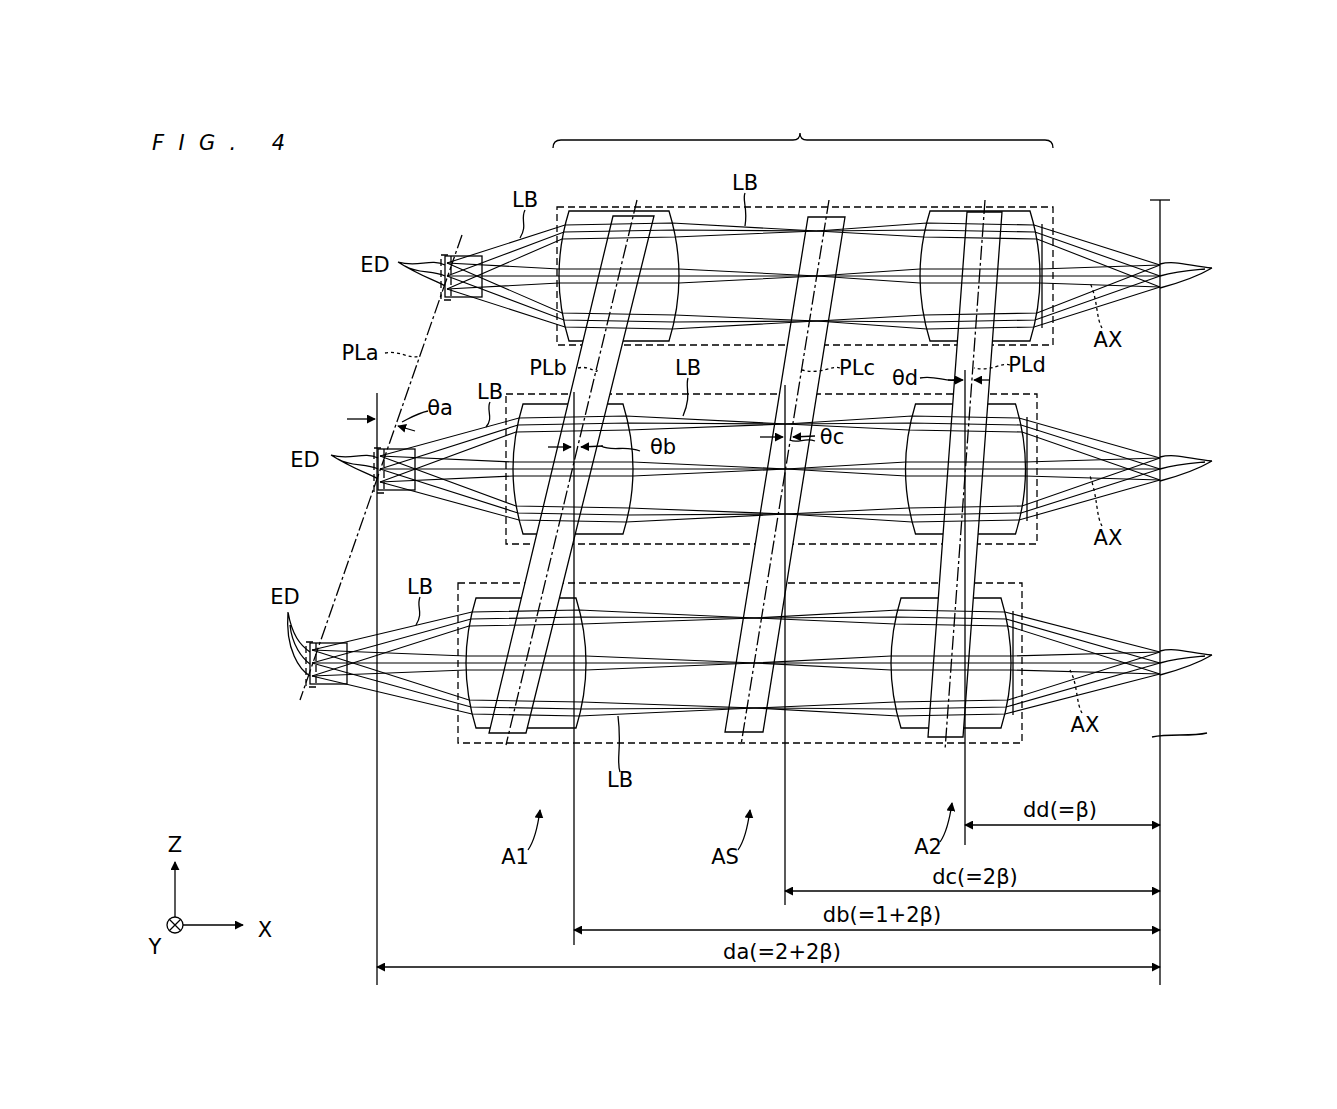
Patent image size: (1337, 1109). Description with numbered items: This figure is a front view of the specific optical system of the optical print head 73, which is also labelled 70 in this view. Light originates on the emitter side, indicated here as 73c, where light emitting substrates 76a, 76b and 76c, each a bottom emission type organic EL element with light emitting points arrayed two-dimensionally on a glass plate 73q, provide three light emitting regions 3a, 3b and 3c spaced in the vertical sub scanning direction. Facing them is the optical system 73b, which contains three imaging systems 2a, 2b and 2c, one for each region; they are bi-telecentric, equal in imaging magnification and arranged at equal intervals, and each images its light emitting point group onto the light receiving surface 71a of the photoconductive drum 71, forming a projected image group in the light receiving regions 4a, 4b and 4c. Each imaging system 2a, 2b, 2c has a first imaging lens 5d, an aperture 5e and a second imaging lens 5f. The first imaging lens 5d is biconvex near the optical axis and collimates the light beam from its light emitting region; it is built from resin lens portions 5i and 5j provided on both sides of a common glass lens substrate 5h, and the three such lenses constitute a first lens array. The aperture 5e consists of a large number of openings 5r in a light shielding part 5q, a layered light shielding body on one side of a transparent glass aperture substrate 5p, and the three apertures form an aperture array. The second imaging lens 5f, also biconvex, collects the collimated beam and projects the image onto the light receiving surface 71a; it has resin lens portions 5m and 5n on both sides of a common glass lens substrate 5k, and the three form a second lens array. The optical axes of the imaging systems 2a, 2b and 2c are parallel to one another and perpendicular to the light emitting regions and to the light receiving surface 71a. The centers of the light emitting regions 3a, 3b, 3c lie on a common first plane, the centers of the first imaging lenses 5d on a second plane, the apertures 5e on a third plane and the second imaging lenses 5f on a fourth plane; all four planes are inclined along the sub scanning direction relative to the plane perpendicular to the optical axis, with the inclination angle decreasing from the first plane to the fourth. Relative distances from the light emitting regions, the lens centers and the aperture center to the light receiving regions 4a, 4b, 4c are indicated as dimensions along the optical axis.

The optical print head 73 is at (1118, 99).
The optical module 70 is at (1068, 130).
The photoconductive drum 71 is at (1180, 198).
The light receiving surface 71a is at (1160, 712).
The optical system 73b is at (803, 128).
The light emitting section 73c is at (457, 203).
The glass plate 73q is at (406, 504).
The light emitting substrate 76a is at (405, 492).
The light emitting substrate 76b is at (322, 690).
The light emitting substrate 76c is at (468, 298).
The imaging system 2a is at (1037, 406).
The imaging system 2b is at (1022, 594).
The imaging system 2c is at (1053, 222).
The light emitting region 3a is at (378, 450).
The light emitting region 3b is at (312, 642).
The light emitting region 3c is at (445, 255).
The light receiving region 4a is at (1183, 492).
The light receiving region 4b is at (1183, 685).
The light receiving region 4c is at (1183, 297).
The first imaging lens 5d is at (650, 216).
The aperture 5e is at (758, 474).
The second imaging lens 5f is at (995, 212).
The lens substrate 5h is at (510, 728).
The lens portion 5i is at (574, 492).
The lens portion 5j is at (526, 534).
The lens substrate 5k is at (947, 728).
The lens portion 5m is at (958, 492).
The lens portion 5n is at (928, 534).
The aperture substrate 5p is at (758, 474).
The light shielding part 5q is at (758, 474).
The openings 5r is at (808, 217).